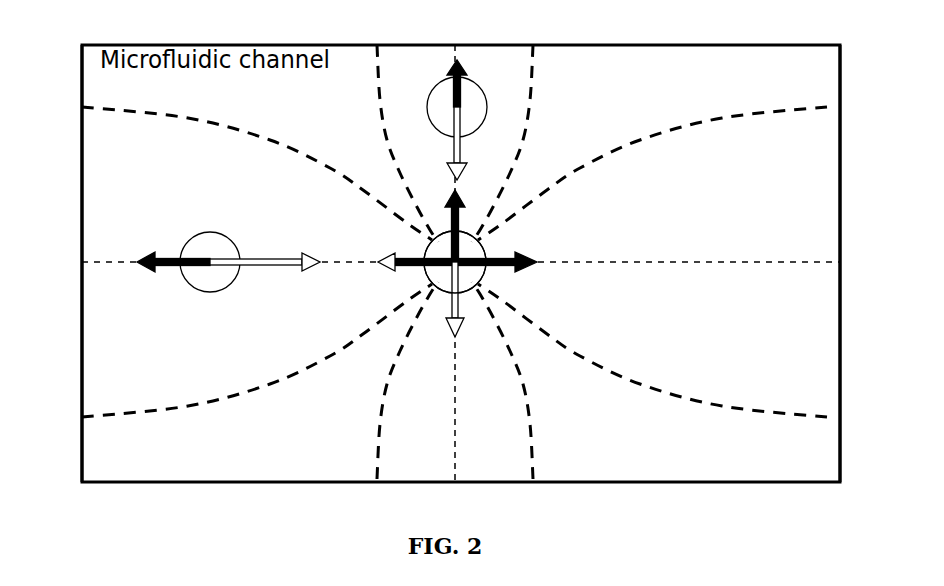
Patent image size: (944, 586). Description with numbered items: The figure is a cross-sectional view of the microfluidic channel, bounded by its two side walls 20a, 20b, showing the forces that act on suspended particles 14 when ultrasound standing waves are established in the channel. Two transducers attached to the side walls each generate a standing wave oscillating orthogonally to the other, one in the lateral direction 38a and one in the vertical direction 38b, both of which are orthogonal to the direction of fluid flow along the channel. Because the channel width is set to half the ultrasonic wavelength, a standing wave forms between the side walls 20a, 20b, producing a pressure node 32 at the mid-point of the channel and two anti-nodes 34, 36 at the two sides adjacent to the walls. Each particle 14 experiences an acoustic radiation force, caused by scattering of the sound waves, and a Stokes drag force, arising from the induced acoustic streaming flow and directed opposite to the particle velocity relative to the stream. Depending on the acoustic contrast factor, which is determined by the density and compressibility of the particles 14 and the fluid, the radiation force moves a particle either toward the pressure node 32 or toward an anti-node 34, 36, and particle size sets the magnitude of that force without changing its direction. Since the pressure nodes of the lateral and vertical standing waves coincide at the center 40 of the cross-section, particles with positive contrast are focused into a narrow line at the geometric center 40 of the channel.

The particles 14 is at (437, 245).
The first channel wall 20a is at (82, 145).
The second channel wall 20b is at (840, 145).
The pressure node 32 is at (476, 285).
The anti-node 34 is at (454, 265).
The anti-node 36 is at (461, 262).
The lateral direction 38a is at (722, 115).
The vertical direction 38b is at (377, 447).
The center of the cross-section 40 is at (439, 274).